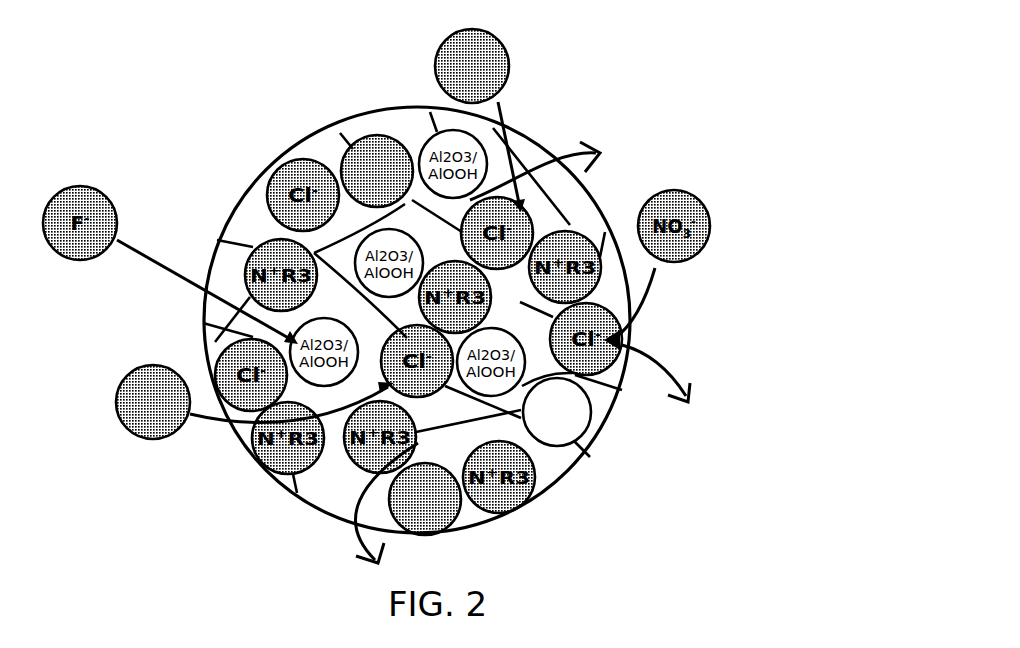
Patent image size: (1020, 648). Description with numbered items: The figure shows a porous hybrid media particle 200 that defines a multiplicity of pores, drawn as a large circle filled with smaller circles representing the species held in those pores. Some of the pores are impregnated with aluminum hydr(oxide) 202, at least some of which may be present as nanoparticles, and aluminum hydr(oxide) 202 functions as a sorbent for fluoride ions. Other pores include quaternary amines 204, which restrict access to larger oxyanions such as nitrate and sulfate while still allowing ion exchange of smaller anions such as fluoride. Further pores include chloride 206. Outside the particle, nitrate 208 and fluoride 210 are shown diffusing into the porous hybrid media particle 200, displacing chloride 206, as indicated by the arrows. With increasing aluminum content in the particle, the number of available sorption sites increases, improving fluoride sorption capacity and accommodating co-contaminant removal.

The porous hybrid media particle 200 is at (263, 130).
The aluminum hydr(oxide) 202 is at (593, 410).
The quaternary amines 204 is at (383, 133).
The chloride 206 is at (430, 538).
The nitrate 208 is at (497, 36).
The fluoride 210 is at (140, 365).